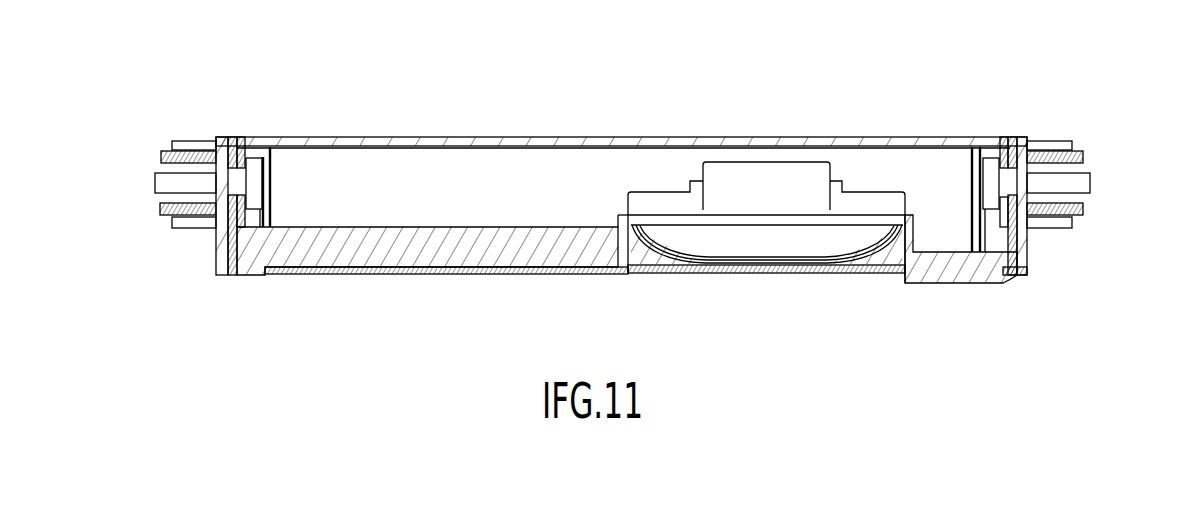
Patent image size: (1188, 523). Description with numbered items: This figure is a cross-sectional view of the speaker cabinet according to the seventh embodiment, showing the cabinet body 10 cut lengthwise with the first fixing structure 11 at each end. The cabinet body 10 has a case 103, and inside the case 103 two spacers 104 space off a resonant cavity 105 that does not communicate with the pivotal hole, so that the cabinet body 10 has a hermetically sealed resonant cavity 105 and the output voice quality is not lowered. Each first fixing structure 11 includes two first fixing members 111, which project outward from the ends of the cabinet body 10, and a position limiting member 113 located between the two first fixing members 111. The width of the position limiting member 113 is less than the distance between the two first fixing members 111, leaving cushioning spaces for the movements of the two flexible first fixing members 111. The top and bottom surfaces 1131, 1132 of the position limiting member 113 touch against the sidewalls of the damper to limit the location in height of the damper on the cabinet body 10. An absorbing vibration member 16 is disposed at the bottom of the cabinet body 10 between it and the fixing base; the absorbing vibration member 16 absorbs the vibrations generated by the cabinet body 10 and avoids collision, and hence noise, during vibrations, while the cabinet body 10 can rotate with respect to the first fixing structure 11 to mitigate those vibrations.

The cabinet body 10 is at (471, 128).
The case 103 is at (356, 136).
The spacer 104 is at (272, 178).
The resonant cavity 105 is at (673, 160).
The first fixing structure 11 is at (193, 220).
The first fixing member 111 is at (155, 182).
The position limiting member 113 is at (229, 276).
The top surface 1131 is at (244, 136).
The bottom surface 1132 is at (231, 135).
The absorbing vibration member 16 is at (235, 277).